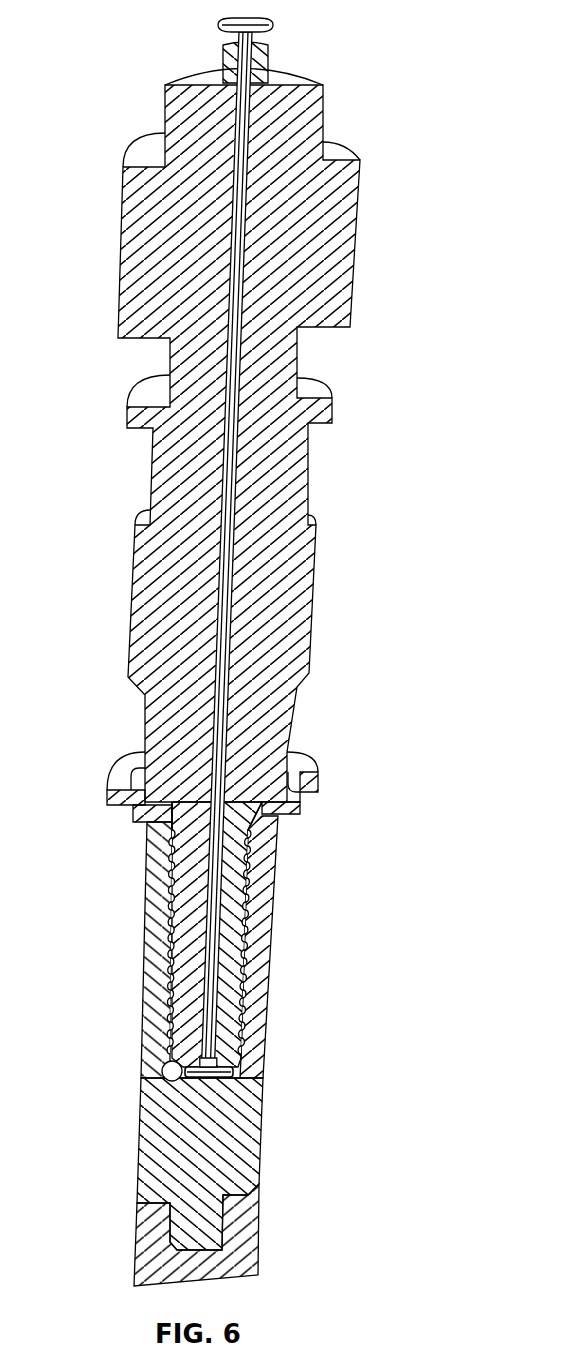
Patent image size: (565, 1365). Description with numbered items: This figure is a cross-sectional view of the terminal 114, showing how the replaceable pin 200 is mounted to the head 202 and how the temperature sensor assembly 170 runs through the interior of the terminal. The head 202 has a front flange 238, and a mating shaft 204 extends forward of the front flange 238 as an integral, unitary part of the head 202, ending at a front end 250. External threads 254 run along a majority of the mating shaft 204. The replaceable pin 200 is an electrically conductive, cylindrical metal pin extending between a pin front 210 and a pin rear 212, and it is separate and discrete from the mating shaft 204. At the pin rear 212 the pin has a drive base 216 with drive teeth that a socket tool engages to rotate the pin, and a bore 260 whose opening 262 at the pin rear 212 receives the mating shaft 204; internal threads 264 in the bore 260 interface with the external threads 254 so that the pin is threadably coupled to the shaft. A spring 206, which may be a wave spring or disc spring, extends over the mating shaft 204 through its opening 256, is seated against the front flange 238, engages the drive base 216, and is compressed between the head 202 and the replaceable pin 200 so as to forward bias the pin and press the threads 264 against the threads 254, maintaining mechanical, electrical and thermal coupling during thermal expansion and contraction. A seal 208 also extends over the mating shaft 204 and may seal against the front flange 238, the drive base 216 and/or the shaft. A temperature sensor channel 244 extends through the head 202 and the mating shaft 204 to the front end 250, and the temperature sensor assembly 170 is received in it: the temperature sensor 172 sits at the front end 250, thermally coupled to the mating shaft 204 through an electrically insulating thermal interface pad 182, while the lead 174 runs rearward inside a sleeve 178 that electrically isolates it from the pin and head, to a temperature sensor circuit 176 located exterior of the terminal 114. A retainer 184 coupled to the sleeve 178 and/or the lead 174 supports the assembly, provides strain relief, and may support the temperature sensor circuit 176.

The terminal 114 is at (384, 120).
The temperature sensor assembly 170 is at (211, 15).
The temperature sensor 172 is at (167, 1060).
The lead 174 is at (253, 33).
The temperature sensor circuit 176 is at (267, 22).
The sleeve 178 is at (250, 125).
The thermal interface pad 182 is at (222, 1090).
The retainer 184 is at (222, 63).
The replaceable pin 200 is at (246, 1137).
The head 202 is at (297, 583).
The mating shaft 204 is at (266, 969).
The spring 206 is at (295, 807).
The seal 208 is at (292, 798).
The pin front 210 is at (225, 1278).
The pin rear 212 is at (148, 822).
The drive base 216 is at (152, 848).
The front flange 238 is at (110, 805).
The temperature sensor channel 244 is at (238, 542).
The front end 250 is at (182, 1084).
The external threads 254 is at (247, 1027).
The opening 256 is at (174, 808).
The bore 260 is at (256, 902).
The opening 262 is at (263, 798).
The internal threads 264 is at (223, 945).